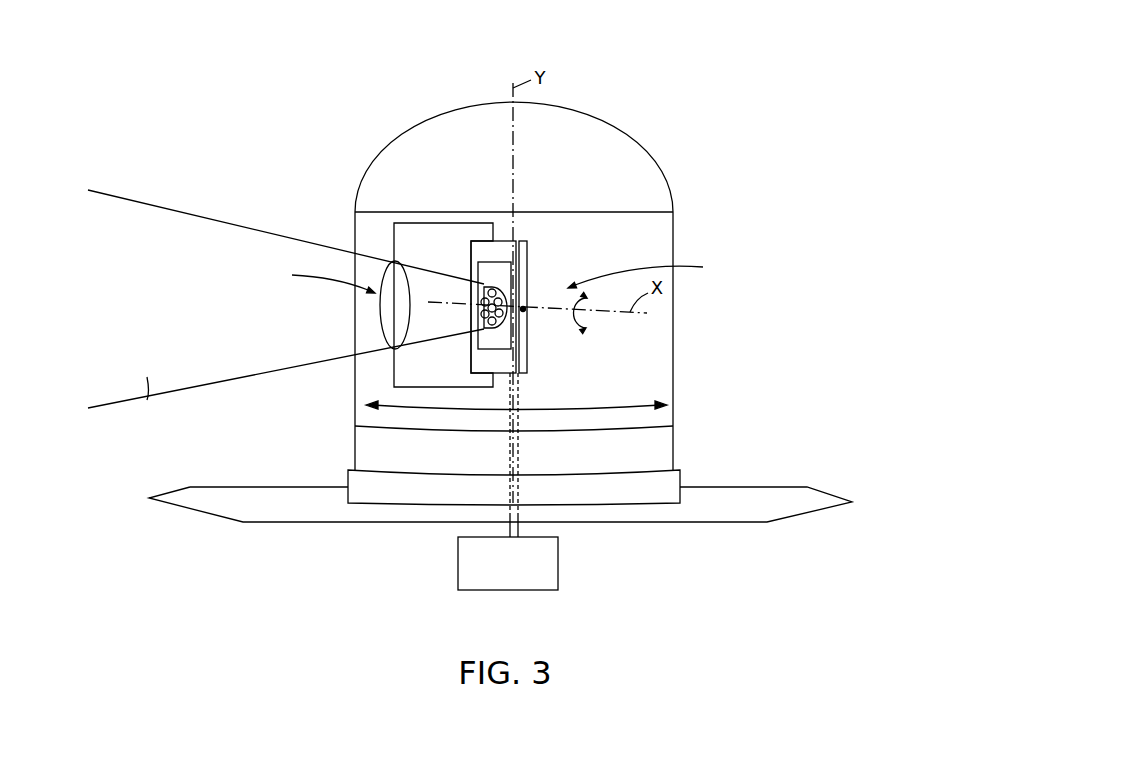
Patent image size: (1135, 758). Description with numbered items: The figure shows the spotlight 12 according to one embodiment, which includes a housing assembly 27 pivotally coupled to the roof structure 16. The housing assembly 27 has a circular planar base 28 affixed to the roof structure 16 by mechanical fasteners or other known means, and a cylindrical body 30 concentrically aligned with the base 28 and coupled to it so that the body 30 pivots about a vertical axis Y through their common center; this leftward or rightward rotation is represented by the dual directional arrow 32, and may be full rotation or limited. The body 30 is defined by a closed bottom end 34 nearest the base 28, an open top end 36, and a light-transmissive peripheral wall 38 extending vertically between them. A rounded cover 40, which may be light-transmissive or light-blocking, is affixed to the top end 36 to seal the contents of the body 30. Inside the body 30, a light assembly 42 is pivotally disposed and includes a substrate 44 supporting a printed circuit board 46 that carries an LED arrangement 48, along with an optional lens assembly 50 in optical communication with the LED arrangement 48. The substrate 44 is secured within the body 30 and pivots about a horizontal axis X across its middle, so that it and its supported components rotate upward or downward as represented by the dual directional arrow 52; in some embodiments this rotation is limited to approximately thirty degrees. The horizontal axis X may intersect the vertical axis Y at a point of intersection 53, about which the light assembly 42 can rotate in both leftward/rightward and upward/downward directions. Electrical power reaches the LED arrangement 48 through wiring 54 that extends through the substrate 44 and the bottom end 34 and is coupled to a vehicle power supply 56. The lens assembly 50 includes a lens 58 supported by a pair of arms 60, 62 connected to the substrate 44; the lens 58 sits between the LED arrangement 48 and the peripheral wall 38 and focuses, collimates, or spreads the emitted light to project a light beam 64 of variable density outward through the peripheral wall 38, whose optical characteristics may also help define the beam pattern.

The spotlight 12 is at (760, 73).
The roof structure 16 is at (803, 500).
The housing assembly 27 is at (286, 132).
The base 28 is at (667, 483).
The body 30 is at (702, 368).
The dual directional arrow 32 is at (430, 410).
The bottom end 34 is at (632, 458).
The top end 36 is at (653, 212).
The peripheral wall 38 is at (673, 342).
The cover 40 is at (643, 167).
The light assembly 42 is at (648, 272).
The substrate 44 is at (498, 253).
The printed circuit board 46 is at (485, 343).
The LED arrangement 48 is at (470, 313).
The lens assembly 50 is at (319, 275).
The dual directional arrow 52 is at (578, 330).
The point of intersection 53 is at (523, 309).
The wiring 54 is at (518, 493).
The vehicle power supply 56 is at (530, 590).
The lens 58 is at (383, 313).
The arm 60 is at (419, 220).
The arm 62 is at (458, 390).
The light beam 64 is at (147, 400).